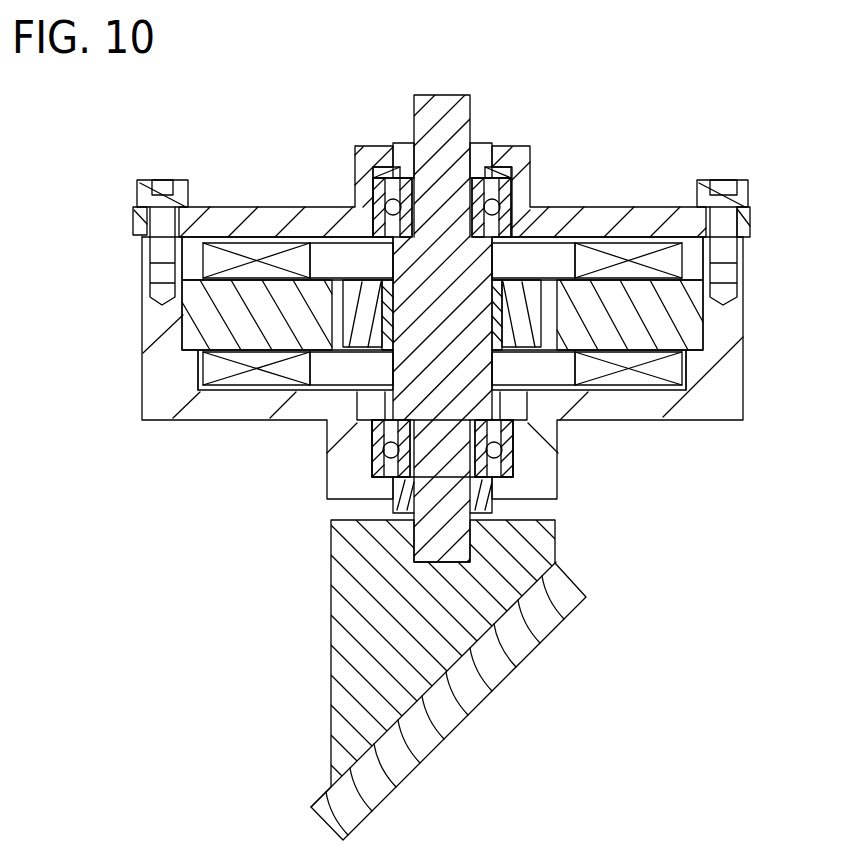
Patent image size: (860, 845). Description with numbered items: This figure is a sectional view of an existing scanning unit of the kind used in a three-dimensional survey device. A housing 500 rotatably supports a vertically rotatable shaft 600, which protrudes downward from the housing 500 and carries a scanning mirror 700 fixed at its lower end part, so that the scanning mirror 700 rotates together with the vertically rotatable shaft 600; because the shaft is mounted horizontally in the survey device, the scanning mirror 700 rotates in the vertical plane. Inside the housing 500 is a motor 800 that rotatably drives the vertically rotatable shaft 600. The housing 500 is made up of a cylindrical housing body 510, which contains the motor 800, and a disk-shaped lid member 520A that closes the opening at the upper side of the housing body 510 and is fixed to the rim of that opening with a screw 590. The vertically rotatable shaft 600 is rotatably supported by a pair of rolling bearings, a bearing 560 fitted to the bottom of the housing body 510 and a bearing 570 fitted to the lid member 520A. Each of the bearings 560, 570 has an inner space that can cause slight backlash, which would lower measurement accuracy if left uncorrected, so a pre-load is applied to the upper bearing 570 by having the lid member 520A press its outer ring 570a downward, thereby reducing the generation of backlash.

The housing 500 is at (439, 327).
The housing body 510 is at (142, 274).
The lid member 520A is at (238, 205).
The bearing 560 is at (517, 443).
The bearing 570 is at (360, 198).
The outer ring 570a is at (531, 192).
The screw 590 is at (712, 180).
The vertically rotatable shaft 600 is at (493, 263).
The scanning mirror 700 is at (513, 670).
The motor 800 is at (223, 340).